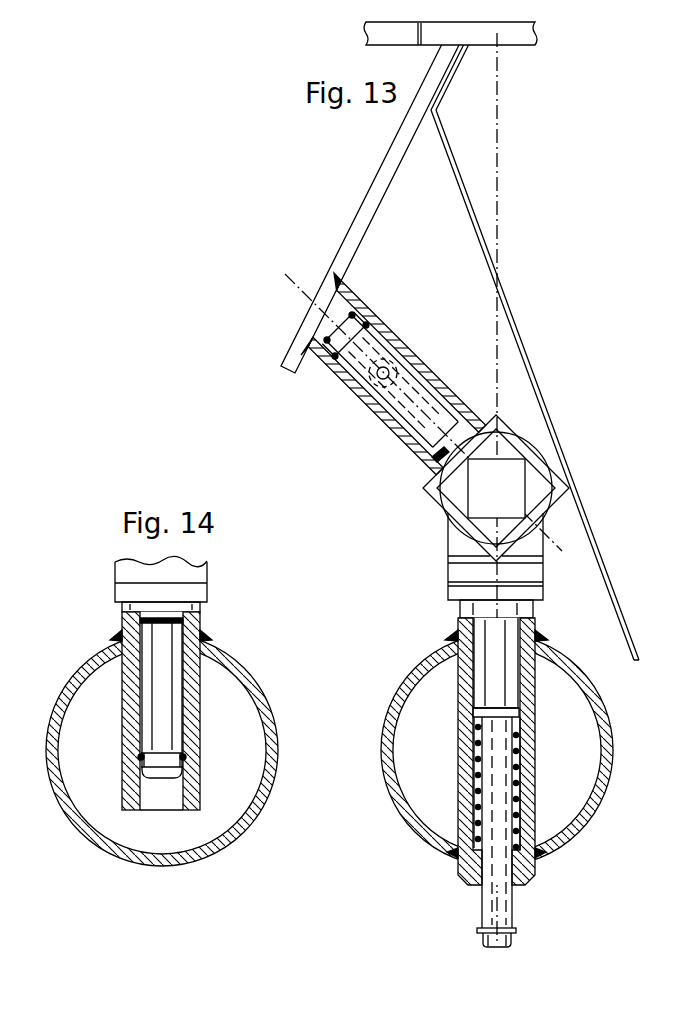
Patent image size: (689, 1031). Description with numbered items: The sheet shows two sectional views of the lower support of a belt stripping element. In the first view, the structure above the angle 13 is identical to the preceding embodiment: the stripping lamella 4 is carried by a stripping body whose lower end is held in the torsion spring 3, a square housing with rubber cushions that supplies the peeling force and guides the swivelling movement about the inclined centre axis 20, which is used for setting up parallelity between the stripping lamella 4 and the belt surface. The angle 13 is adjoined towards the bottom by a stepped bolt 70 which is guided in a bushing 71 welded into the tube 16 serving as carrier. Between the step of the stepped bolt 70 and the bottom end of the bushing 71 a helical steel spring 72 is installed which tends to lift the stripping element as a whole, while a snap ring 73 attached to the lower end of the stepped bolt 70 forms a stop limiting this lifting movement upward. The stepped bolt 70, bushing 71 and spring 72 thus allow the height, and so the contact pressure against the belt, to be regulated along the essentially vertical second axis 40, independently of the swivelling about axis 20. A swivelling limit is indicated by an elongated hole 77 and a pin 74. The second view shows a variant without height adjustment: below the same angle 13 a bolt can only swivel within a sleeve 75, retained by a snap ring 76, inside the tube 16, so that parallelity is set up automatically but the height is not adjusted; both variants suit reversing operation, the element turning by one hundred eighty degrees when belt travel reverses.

In FIG. 13, the torsion spring 3 is at (424, 499).
In FIG. 13, the stripping lamella 4 is at (368, 205).
In FIG. 13, the angle 13 is at (455, 543).
In FIG. 14, the angle 13 is at (120, 575).
In FIG. 13, the tube 16 is at (393, 703).
In FIG. 14, the tube 16 is at (258, 683).
In FIG. 13, the centre axis 20 is at (287, 285).
In FIG. 13, the second axis 40 is at (499, 113).
In FIG. 13, the stepped bolt 70 is at (484, 692).
In FIG. 13, the bushing 71 is at (528, 628).
In FIG. 13, the spring 72 is at (472, 757).
In FIG. 13, the snap ring 73 is at (517, 931).
In FIG. 13, the pin 74 is at (389, 368).
In FIG. 14, the sleeve 75 is at (130, 722).
In FIG. 14, the snap ring 76 is at (140, 757).
In FIG. 13, the elongated hole 77 is at (362, 390).